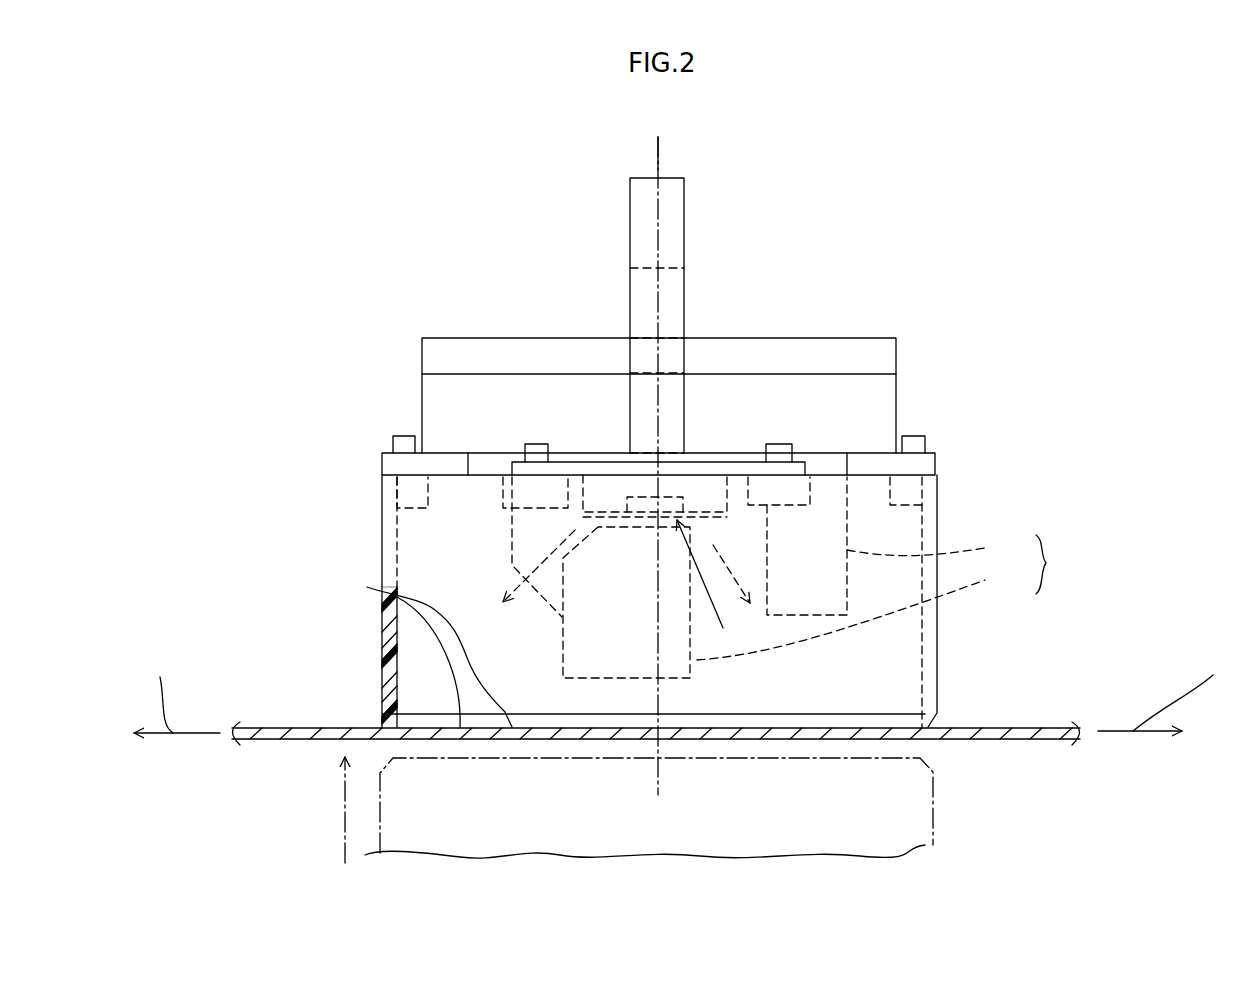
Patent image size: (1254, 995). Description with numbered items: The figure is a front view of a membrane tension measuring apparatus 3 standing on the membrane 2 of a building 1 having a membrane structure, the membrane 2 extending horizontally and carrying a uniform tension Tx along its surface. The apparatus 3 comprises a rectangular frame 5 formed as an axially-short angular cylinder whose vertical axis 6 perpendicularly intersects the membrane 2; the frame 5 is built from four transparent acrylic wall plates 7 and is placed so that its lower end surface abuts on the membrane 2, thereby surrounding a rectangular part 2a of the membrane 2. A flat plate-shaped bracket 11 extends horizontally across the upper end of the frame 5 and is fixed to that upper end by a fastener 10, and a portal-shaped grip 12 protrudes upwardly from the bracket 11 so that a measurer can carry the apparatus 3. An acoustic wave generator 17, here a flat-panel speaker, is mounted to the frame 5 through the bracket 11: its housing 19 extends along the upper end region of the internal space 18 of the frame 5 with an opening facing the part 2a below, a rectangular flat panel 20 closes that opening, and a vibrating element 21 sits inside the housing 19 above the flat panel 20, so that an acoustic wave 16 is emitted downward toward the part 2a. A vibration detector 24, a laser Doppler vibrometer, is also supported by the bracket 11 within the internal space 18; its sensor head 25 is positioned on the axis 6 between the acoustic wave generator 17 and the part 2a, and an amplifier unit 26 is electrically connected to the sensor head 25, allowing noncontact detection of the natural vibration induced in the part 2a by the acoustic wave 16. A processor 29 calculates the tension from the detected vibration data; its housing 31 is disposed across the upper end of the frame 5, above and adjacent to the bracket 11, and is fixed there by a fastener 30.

The building 1 is at (1072, 702).
The membrane 2 is at (1012, 720).
The rectangular part of the membrane 2a is at (458, 697).
The membrane tension measuring apparatus 3 is at (1018, 386).
The frame 5 is at (381, 496).
The axis 6 is at (660, 163).
The wall plate 7 is at (423, 553).
The fastener 10 is at (536, 444).
The bracket 11 is at (610, 462).
The grip 12 is at (672, 218).
The acoustic wave 16 is at (540, 590).
The acoustic wave generator 17 is at (716, 586).
The internal space of the frame 18 is at (425, 697).
The housing 19 is at (735, 490).
The flat panel 20 is at (710, 517).
The vibrating element 21 is at (690, 500).
The vibration detector 24 is at (1059, 564).
The sensor head 25 is at (861, 613).
The amplifier unit 26 is at (936, 551).
The processor 29 is at (456, 336).
The fastener 30 is at (404, 436).
The housing 31 is at (503, 385).